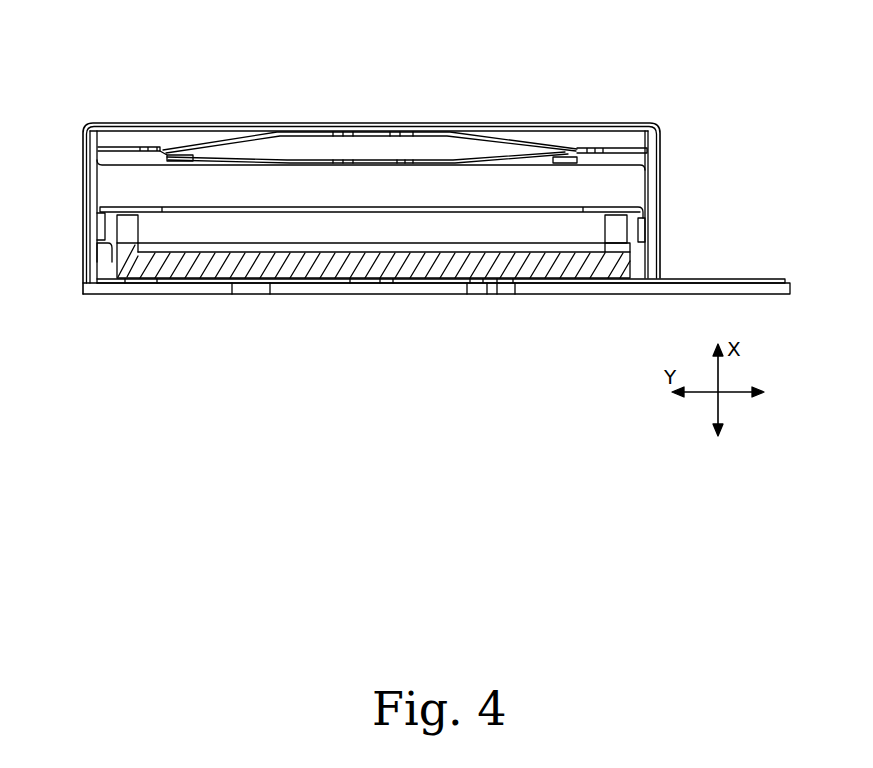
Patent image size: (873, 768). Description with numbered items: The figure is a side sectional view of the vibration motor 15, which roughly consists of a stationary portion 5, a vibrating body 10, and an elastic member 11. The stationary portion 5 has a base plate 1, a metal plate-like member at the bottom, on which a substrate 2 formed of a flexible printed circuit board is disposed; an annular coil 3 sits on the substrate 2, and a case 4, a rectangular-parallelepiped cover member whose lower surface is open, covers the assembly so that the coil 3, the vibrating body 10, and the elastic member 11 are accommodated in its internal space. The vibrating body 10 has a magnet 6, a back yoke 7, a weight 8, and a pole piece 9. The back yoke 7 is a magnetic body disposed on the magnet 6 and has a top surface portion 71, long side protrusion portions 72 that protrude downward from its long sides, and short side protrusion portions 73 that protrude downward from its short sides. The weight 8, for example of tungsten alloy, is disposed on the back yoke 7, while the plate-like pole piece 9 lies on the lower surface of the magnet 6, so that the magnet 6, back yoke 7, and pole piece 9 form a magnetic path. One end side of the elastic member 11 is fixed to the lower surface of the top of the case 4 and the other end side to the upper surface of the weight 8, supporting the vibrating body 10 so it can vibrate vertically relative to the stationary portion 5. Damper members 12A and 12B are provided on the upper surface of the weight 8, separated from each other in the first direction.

The vibration motor 15 is at (481, 95).
The case 4 is at (655, 128).
The stationary portion 5 is at (377, 207).
The vibrating body 10 is at (93, 221).
The weight 8 is at (642, 175).
The elastic member 11 is at (540, 136).
The damper member 12A is at (167, 158).
The damper member 12B is at (581, 153).
The top surface portion 71 is at (123, 206).
The long side protrusion portion 72 is at (117, 240).
The short side protrusion portion 73 is at (102, 250).
The magnet 6 is at (592, 235).
The back yoke 7 is at (642, 235).
The pole piece 9 is at (617, 252).
The coil 3 is at (614, 249).
The substrate 2 is at (783, 279).
The base plate 1 is at (783, 295).